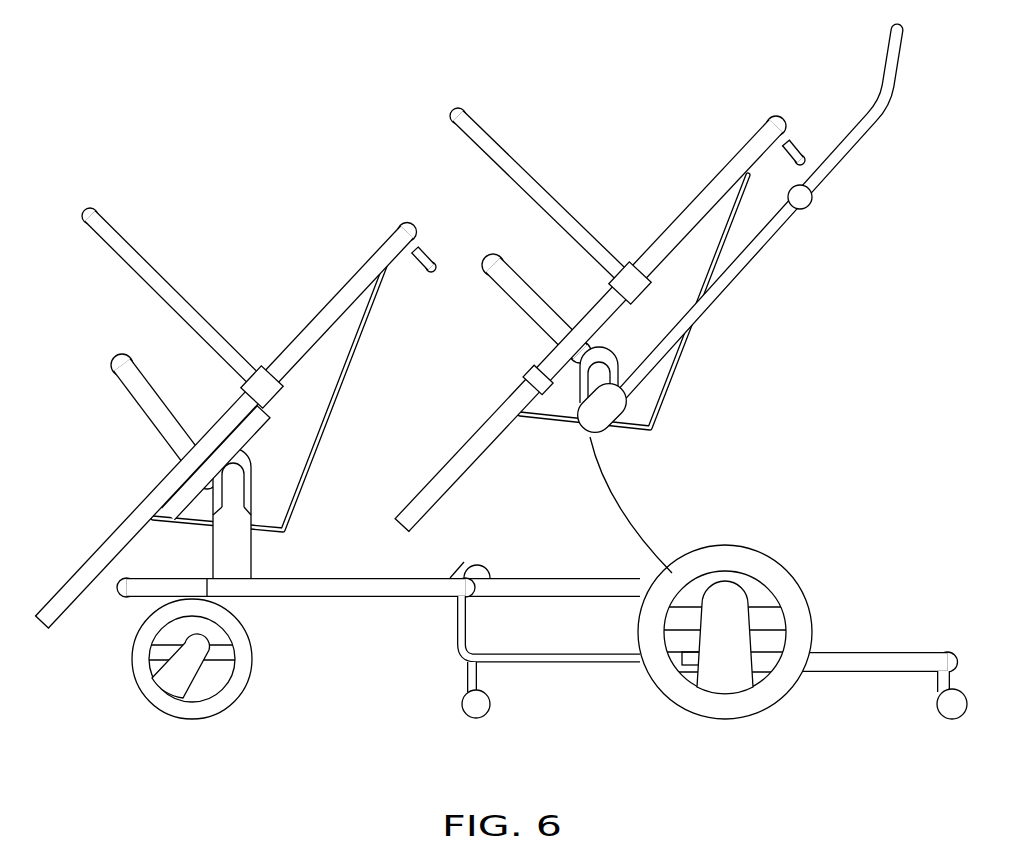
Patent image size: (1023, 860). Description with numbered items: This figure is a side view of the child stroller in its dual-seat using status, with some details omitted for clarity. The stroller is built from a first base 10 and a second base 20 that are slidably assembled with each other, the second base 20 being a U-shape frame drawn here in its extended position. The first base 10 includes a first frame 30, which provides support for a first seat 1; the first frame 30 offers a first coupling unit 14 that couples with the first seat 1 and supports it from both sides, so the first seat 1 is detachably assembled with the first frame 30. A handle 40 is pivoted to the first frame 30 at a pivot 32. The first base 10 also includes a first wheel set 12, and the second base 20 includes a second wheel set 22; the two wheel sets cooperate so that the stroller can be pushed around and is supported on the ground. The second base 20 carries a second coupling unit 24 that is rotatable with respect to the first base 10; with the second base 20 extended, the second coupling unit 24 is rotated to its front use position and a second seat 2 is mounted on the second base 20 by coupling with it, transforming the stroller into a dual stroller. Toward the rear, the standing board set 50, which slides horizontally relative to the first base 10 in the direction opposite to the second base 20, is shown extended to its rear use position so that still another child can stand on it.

The first seat 1 is at (698, 286).
The second seat 2 is at (234, 362).
The first base 10 is at (545, 613).
The first wheel set 12 is at (774, 618).
The first coupling unit 14 is at (663, 460).
The second base 20 is at (276, 669).
The second wheel set 22 is at (250, 659).
The second coupling unit 24 is at (141, 513).
The first frame 30 is at (802, 213).
The pivot 32 is at (894, 203).
The handle 40 is at (750, 213).
The standing board set 50 is at (886, 592).